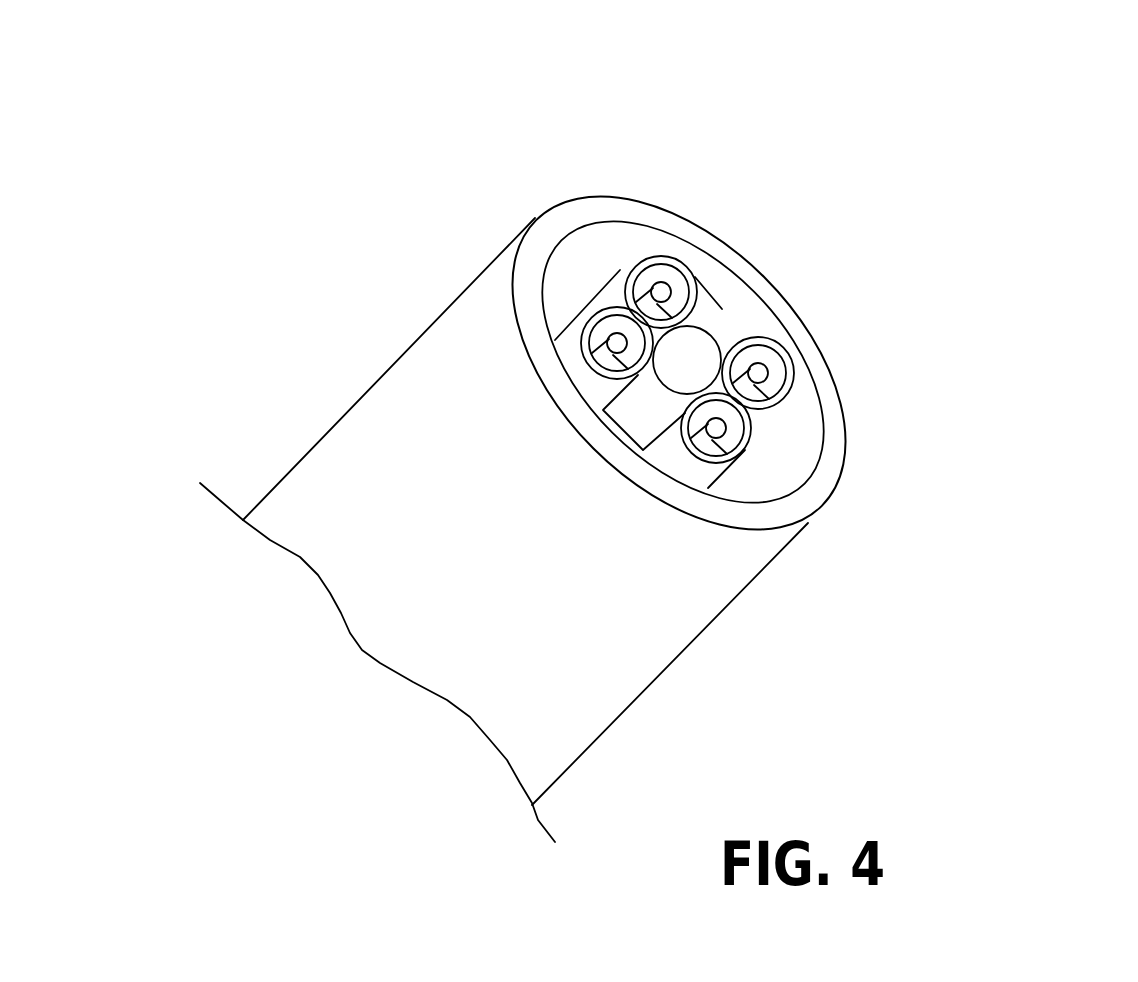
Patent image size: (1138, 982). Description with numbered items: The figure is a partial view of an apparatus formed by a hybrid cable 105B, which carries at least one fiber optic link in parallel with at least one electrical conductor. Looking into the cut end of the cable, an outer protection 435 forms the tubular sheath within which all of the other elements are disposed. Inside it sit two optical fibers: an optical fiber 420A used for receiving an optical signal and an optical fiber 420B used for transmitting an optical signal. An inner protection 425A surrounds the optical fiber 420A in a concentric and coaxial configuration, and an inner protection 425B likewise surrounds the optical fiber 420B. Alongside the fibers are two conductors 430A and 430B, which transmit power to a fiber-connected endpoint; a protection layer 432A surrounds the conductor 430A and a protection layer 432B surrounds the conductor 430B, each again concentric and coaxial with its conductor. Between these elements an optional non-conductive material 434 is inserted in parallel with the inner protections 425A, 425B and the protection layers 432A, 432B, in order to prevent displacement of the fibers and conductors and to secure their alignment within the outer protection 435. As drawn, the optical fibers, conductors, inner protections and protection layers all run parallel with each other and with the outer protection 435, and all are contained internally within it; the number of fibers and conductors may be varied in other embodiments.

The hybrid cable 105B is at (986, 156).
The outer protection 435 is at (407, 388).
The non-conductive material 434 is at (693, 343).
The conductor 430A is at (660, 284).
The protection layer 432A is at (730, 153).
The conductor 430B is at (613, 333).
The protection layer 432B is at (607, 378).
The optical fiber 420A is at (766, 366).
The inner protection 425A is at (789, 357).
The optical fiber 420B is at (727, 430).
The inner protection 425B is at (745, 449).